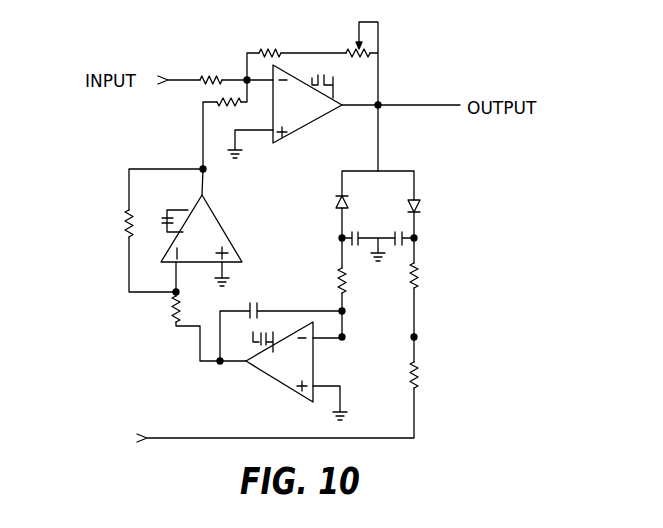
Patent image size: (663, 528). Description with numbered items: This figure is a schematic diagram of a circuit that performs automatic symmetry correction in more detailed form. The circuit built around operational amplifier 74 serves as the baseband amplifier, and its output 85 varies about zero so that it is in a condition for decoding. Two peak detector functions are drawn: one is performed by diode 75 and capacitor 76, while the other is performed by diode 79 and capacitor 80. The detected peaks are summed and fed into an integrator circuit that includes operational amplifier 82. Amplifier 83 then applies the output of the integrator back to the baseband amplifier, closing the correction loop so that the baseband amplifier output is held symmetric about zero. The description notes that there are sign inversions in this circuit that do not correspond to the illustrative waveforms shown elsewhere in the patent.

The operational amplifier 74 is at (313, 125).
The diode 75 is at (420, 203).
The capacitor 76 is at (393, 257).
The diode 79 is at (337, 205).
The capacitor 80 is at (357, 233).
The operational amplifier 82 is at (267, 378).
The amplifier 83 is at (222, 214).
The output 85 is at (392, 106).